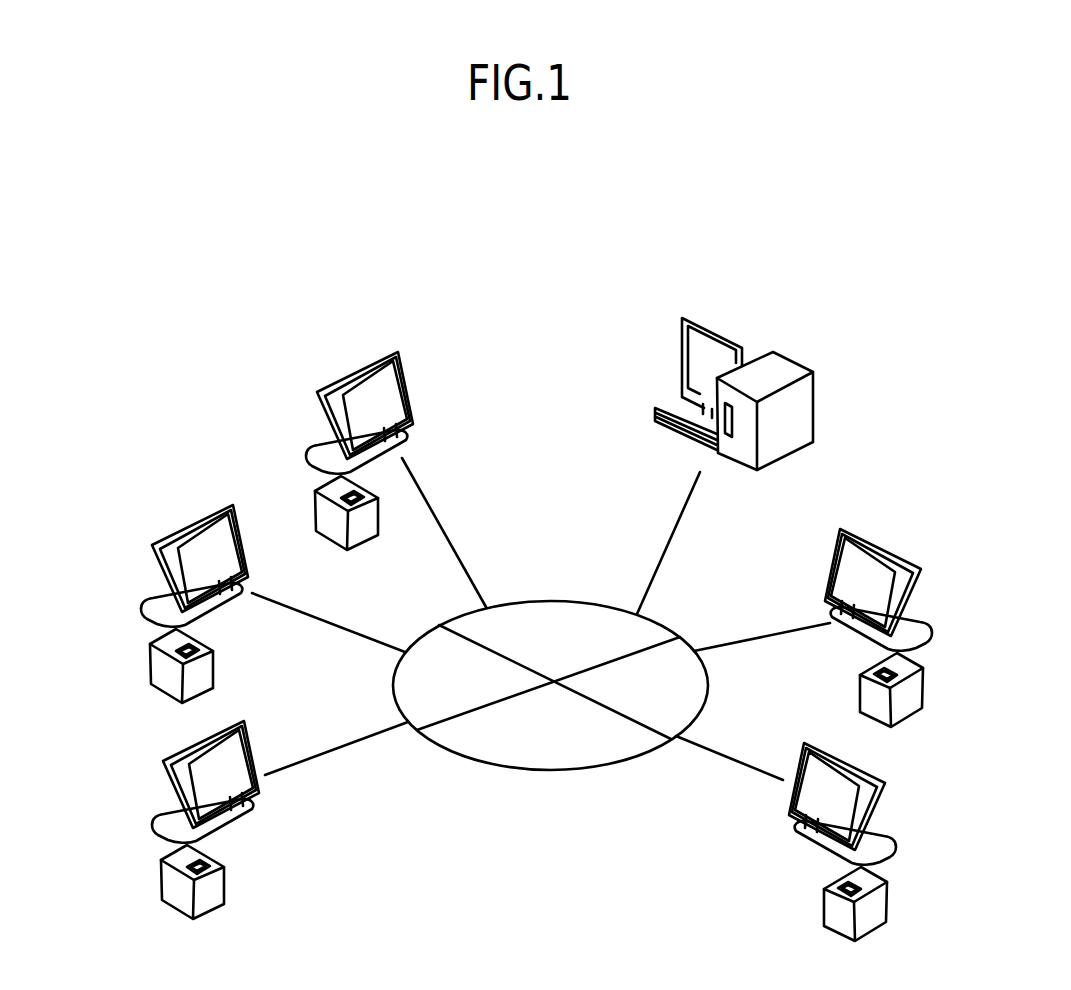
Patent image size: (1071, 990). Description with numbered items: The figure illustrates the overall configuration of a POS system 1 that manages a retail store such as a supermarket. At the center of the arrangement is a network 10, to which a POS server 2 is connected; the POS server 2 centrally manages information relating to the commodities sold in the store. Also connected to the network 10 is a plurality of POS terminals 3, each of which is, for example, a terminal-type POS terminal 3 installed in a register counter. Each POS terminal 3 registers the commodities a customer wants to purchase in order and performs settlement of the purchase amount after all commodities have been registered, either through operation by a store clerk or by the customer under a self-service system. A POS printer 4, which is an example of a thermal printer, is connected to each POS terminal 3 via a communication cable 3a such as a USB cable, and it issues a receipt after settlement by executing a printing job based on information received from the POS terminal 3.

The POS system 1 is at (921, 297).
The POS server 2 is at (797, 352).
The POS terminal 3 is at (320, 392).
The communication cable 3a is at (303, 457).
The POS printer 4 is at (315, 515).
The network 10 is at (542, 768).